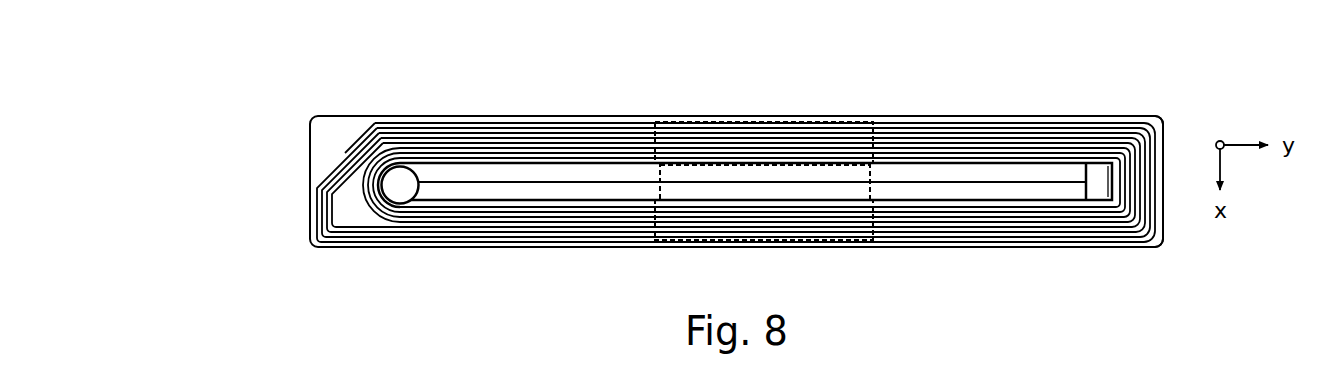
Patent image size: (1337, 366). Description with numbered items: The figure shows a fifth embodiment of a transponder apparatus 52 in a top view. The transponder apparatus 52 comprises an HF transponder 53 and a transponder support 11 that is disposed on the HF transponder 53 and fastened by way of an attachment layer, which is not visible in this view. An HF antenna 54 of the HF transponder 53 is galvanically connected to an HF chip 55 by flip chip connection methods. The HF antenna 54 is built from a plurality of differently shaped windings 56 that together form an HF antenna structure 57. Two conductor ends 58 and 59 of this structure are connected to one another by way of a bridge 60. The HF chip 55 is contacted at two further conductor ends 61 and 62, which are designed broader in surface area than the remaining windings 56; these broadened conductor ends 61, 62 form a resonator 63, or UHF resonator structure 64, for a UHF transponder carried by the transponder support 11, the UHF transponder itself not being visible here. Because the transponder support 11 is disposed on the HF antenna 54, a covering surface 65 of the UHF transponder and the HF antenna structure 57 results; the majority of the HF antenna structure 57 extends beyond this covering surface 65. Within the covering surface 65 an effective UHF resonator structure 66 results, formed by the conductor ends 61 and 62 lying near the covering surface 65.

The transponder apparatus 52 is at (272, 99).
The HF transponder 53 is at (1176, 142).
The HF antenna 54 is at (1053, 115).
The HF chip 55 is at (1097, 192).
The windings 56 is at (930, 229).
The HF antenna structure 57 is at (970, 115).
The conductor end 58 is at (326, 145).
The conductor end 59 is at (400, 192).
The bridge 60 is at (342, 143).
The conductor end 61 is at (904, 176).
The conductor end 62 is at (995, 195).
The resonator 63 is at (557, 157).
The UHF resonator structure 64 is at (502, 149).
The covering surface 65 is at (723, 117).
The effective UHF resonator structure 66 is at (763, 207).
The transponder support 11 is at (793, 145).